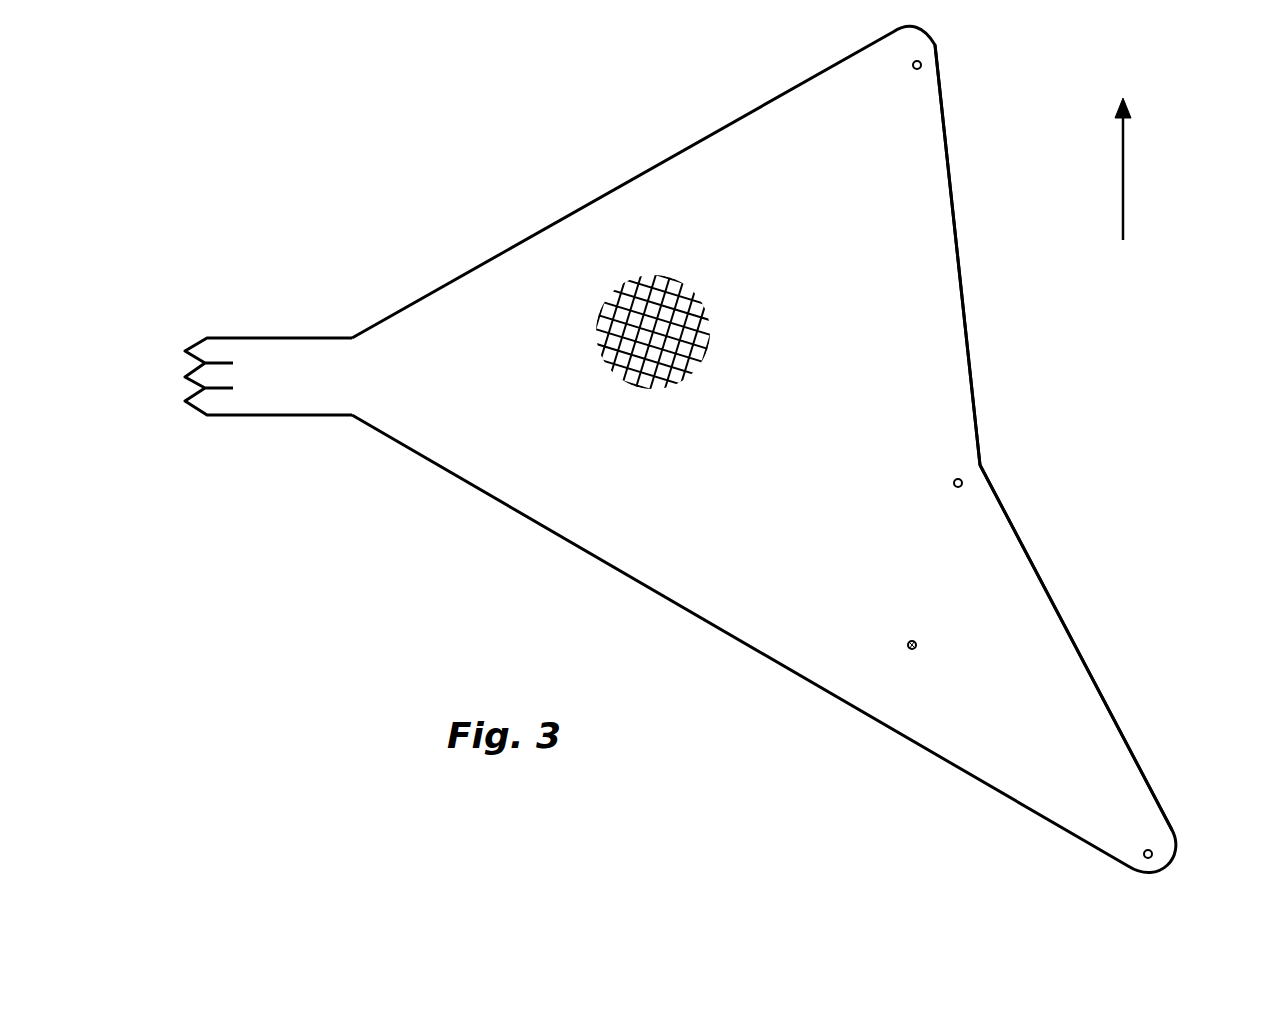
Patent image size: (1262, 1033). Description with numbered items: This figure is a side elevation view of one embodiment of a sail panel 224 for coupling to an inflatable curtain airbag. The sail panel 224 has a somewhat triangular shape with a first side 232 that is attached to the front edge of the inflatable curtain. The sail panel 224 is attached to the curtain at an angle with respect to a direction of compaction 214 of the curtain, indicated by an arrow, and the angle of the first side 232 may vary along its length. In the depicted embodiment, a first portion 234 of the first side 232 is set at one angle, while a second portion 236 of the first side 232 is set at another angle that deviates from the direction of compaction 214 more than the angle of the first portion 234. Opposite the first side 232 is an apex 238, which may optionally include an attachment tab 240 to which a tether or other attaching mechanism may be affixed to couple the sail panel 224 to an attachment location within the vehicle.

The direction of compaction 214 is at (1123, 173).
The sail panel 224 is at (565, 180).
The first side 232 is at (982, 462).
The first portion 234 is at (958, 252).
The second portion 236 is at (1075, 643).
The apex 238 is at (343, 375).
The attachment tab 240 is at (243, 360).